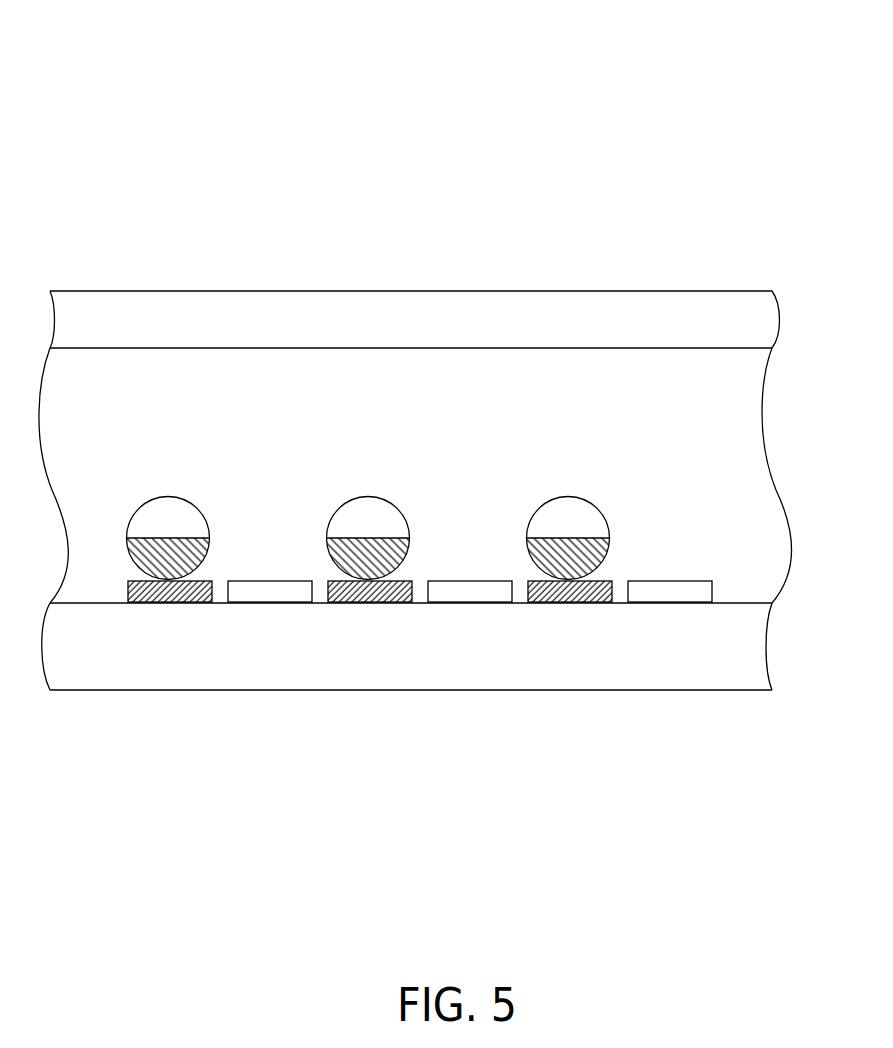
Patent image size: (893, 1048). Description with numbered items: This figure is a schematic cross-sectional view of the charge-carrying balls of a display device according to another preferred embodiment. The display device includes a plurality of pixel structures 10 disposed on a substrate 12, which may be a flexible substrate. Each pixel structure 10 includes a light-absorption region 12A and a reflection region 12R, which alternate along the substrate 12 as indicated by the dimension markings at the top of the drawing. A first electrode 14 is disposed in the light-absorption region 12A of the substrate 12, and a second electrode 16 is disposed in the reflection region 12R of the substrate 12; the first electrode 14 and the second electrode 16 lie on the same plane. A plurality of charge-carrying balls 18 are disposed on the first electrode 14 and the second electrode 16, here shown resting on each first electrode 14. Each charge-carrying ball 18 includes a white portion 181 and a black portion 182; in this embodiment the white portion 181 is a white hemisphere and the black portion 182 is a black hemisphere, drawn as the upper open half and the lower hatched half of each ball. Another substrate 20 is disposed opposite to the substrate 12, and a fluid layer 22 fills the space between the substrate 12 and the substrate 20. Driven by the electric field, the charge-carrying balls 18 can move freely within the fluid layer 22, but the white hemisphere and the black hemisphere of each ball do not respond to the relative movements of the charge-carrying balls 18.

The pixel structure 10 is at (746, 100).
The substrate 12 is at (729, 680).
The light-absorption region 12A is at (128, 267).
The reflection region 12R is at (228, 267).
The first electrode 14 is at (170, 592).
The second electrode 16 is at (270, 592).
The charge-carrying ball 18 is at (416, 509).
The white portion 181 is at (201, 511).
The black portion 182 is at (403, 540).
The substrate 20 is at (729, 334).
The fluid layer 22 is at (762, 479).